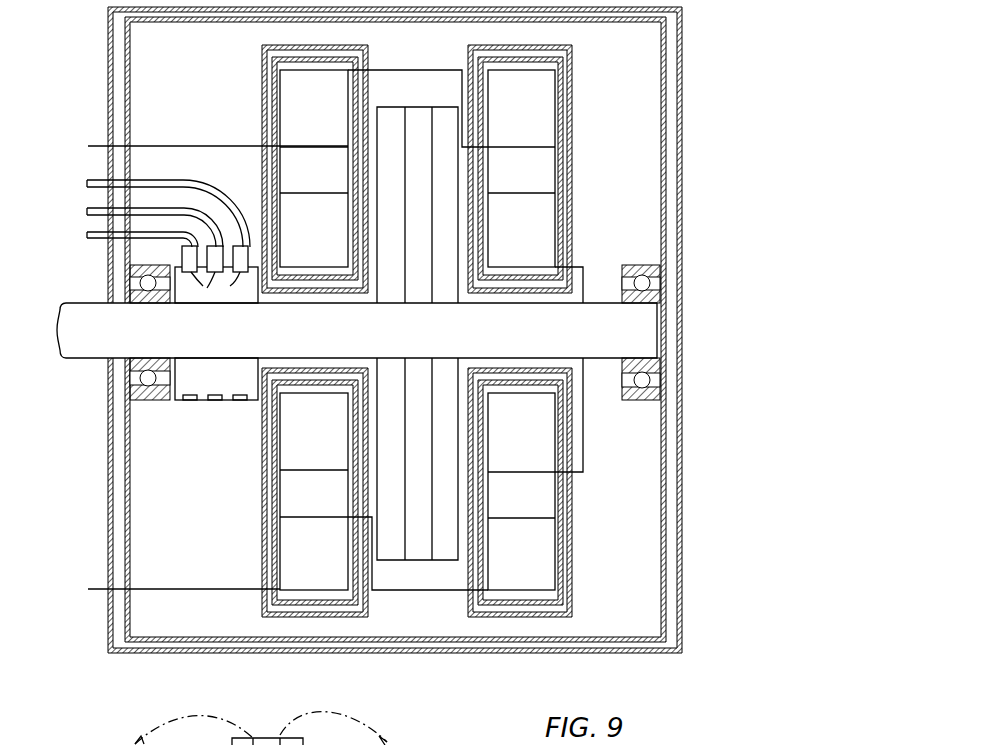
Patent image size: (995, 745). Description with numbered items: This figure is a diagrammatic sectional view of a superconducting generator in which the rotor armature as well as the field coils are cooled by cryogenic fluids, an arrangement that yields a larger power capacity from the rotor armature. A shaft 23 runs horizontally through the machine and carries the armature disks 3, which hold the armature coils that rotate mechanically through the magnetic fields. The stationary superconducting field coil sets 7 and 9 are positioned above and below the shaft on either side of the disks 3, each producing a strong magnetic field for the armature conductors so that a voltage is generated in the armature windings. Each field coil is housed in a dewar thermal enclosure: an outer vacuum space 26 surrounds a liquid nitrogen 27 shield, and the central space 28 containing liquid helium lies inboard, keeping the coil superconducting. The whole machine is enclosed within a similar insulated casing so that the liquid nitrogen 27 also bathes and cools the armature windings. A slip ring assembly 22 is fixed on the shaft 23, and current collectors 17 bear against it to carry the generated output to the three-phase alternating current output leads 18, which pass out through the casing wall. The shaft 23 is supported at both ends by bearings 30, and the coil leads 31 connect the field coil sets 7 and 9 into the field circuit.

The disk 3 is at (397, 208).
The superconducting field coil set 7 is at (322, 98).
The field coil set 9 is at (322, 586).
The current collectors 17 is at (216, 274).
The three-phase alternating current output leads 18 is at (90, 235).
The slip ring assembly 22 is at (209, 402).
The shaft 23 is at (581, 340).
The vacuum space 26 is at (674, 84).
The liquid nitrogen 27 is at (209, 99).
The central space containing liquid helium 28 is at (543, 178).
The bearing 30 is at (658, 392).
The coil leads 31 is at (101, 146).